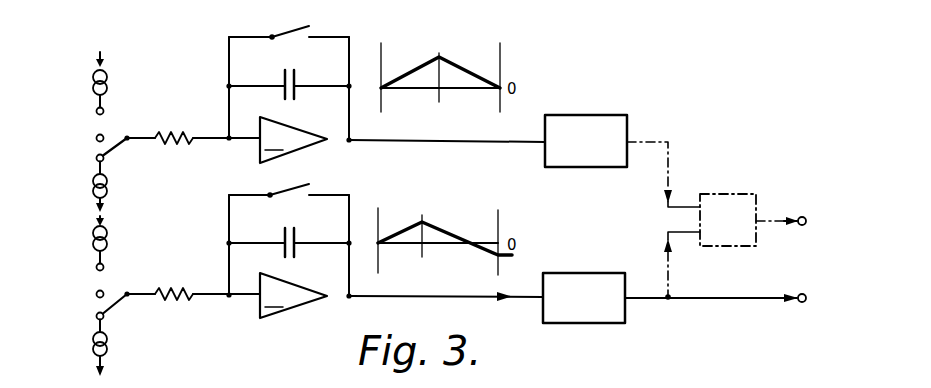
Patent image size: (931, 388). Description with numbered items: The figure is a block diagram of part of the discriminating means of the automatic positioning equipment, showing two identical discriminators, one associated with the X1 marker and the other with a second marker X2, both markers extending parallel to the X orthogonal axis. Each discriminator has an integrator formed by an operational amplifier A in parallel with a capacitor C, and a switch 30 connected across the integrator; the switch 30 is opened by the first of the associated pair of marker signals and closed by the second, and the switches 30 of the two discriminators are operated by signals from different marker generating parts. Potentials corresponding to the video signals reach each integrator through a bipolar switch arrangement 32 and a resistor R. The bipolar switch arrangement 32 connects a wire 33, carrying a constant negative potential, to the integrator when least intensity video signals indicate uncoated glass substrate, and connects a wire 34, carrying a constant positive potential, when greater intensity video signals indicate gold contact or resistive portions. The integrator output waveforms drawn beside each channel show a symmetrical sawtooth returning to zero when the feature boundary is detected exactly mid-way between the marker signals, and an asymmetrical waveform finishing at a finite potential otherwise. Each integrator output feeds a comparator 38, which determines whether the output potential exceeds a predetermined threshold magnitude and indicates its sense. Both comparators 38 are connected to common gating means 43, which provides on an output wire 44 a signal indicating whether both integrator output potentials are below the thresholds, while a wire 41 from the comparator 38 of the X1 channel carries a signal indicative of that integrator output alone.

The switch 30 is at (284, 18).
The bipolar switch arrangement 32 is at (86, 143).
The wire 33 is at (98, 164).
The wire 34 is at (96, 102).
The comparator 38 is at (598, 153).
The wire 41 is at (725, 301).
The gating means 43 is at (740, 233).
The output wire 44 is at (784, 225).
The resistor R is at (176, 132).
The capacitor C is at (283, 74).
The operational amplifier A is at (293, 217).
The X1 marker X1 is at (333, 179).
The X2 marker X2 is at (333, 14).